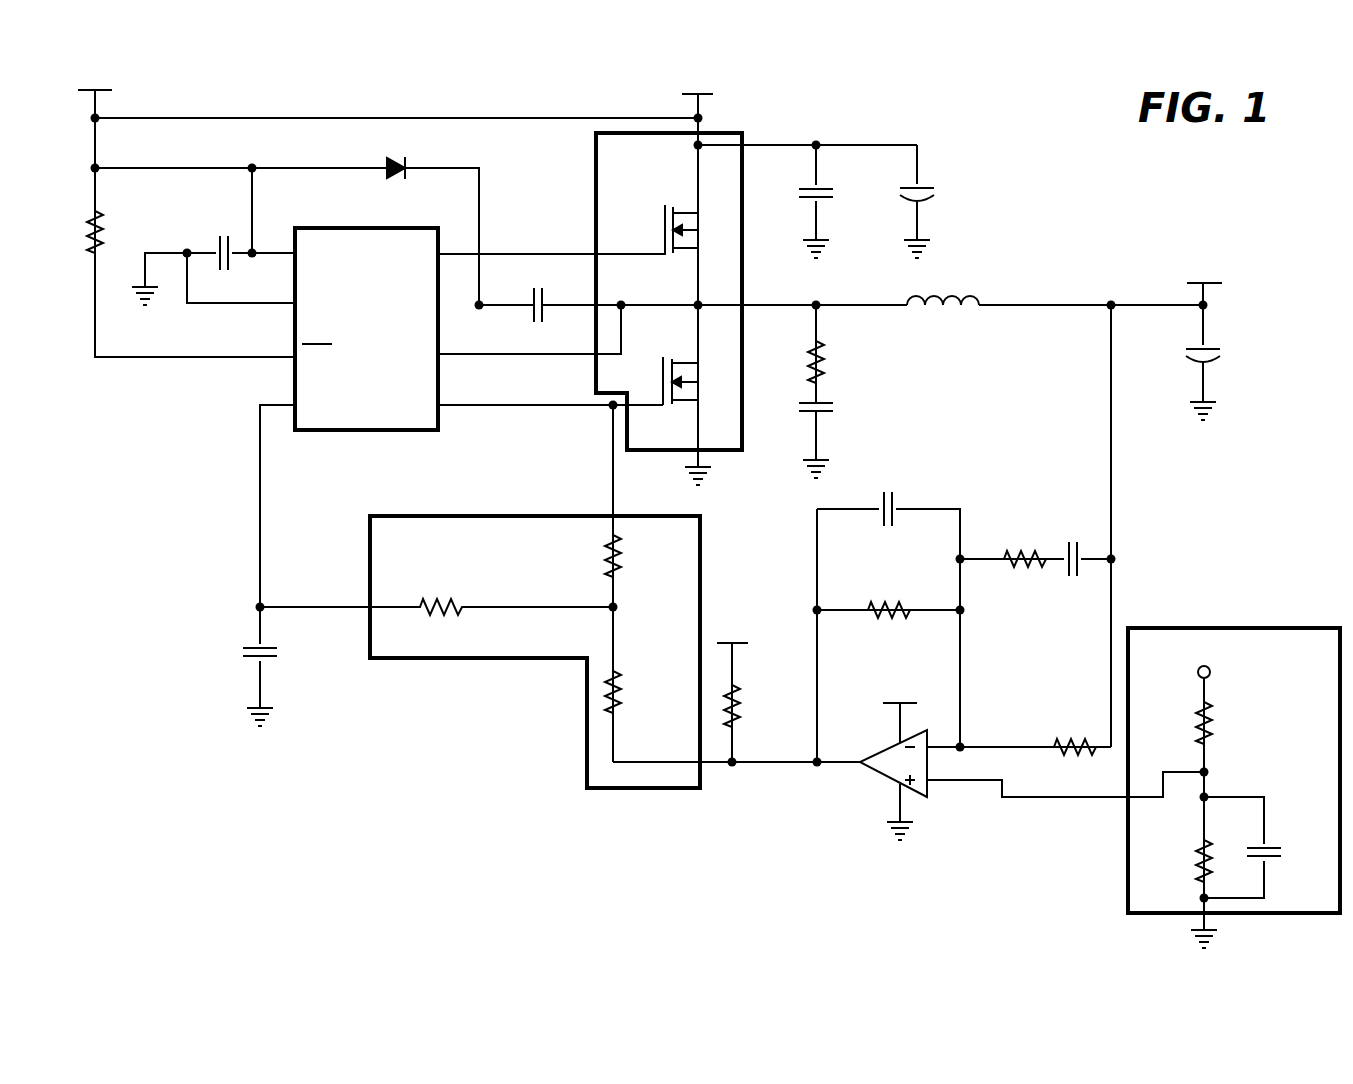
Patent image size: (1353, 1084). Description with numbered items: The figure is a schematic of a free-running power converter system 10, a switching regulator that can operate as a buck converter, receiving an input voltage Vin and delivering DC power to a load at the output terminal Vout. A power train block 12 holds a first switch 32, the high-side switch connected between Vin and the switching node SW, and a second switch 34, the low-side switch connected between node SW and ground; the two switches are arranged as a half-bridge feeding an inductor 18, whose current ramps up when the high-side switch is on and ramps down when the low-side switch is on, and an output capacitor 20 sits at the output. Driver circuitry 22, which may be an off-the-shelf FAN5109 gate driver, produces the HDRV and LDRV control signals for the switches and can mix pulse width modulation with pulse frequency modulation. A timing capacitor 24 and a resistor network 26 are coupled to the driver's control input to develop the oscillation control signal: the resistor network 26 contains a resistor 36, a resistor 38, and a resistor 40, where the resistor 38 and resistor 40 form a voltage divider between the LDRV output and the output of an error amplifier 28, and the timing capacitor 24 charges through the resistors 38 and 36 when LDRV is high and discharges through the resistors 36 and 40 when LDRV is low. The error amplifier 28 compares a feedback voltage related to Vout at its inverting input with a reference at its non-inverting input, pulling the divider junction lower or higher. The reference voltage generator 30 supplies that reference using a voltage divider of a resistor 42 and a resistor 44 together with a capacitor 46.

The free-running power converter system 10 is at (1103, 209).
The power train block 12 is at (620, 132).
The inductor 18 is at (955, 290).
The output capacitor 20 is at (1197, 346).
The driver circuitry 22 is at (372, 434).
The timing capacitor 24 is at (255, 645).
The resistor network 26 is at (613, 790).
The error amplifier 28 is at (878, 776).
The reference voltage generator 30 is at (1178, 628).
The first switch 32 is at (683, 208).
The second switch 34 is at (688, 357).
The resistor 36 is at (455, 605).
The resistor 38 is at (615, 578).
The resistor 40 is at (623, 683).
The resistor 42 is at (1200, 708).
The resistor 44 is at (1200, 842).
The capacitor 46 is at (1270, 843).